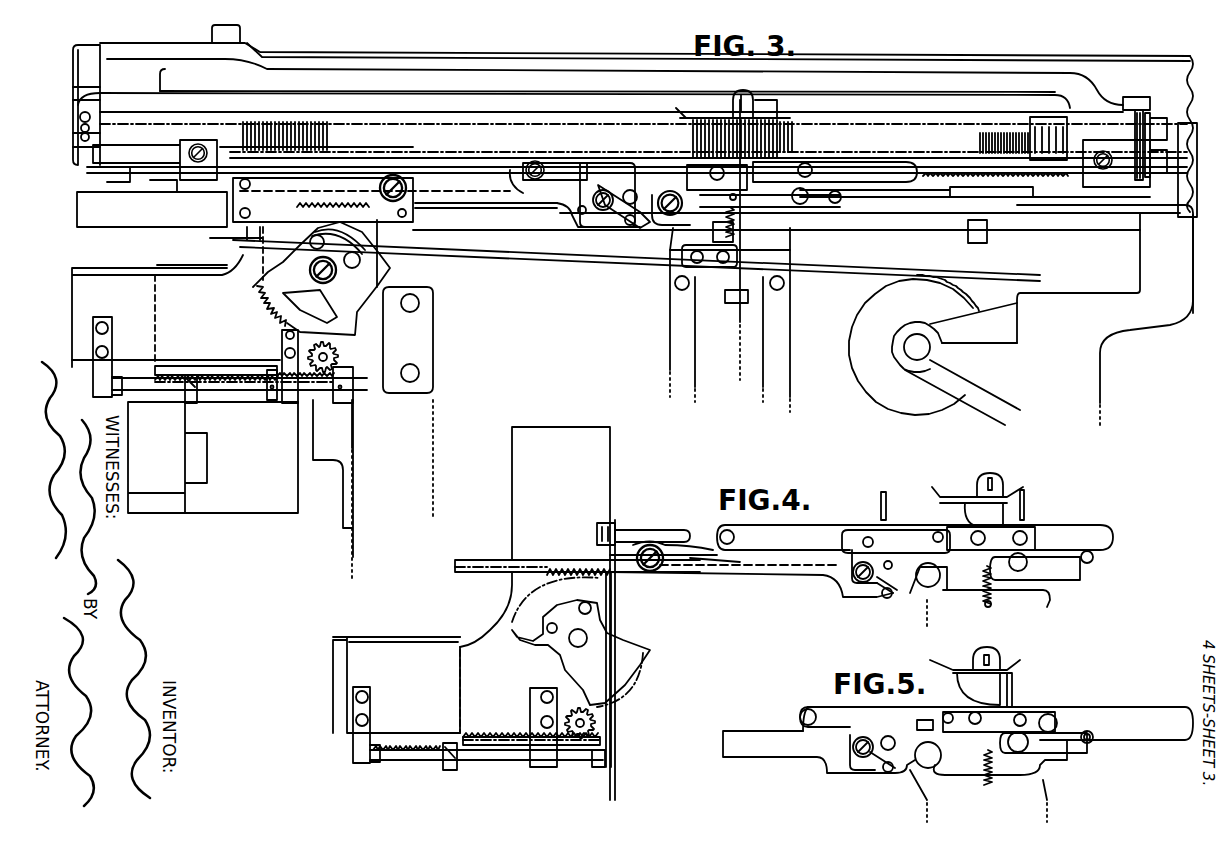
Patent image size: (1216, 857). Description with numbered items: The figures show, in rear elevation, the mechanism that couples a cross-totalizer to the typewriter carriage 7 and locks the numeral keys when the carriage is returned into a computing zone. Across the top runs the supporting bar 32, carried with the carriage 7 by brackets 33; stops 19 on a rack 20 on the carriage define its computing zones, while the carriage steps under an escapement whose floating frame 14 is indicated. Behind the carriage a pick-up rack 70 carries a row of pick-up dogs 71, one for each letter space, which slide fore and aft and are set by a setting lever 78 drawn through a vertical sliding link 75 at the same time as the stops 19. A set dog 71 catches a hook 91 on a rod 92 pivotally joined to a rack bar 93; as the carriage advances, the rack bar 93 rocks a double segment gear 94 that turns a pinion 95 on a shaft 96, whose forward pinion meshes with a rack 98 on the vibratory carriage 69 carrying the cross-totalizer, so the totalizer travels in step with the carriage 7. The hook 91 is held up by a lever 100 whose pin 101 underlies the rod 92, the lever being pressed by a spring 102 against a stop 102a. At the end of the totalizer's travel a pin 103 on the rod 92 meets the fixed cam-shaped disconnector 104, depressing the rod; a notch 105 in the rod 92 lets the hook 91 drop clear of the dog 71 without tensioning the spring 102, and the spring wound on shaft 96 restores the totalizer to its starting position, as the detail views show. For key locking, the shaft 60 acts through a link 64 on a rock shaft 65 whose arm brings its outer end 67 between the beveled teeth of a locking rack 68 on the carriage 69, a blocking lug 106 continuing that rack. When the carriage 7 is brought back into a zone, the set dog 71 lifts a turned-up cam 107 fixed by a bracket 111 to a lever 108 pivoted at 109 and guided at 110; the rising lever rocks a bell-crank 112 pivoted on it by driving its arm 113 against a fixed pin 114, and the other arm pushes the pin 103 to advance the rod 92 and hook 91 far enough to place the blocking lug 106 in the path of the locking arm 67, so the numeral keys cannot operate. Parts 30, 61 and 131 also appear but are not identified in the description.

In FIG. 3, the carriage 7 is at (70, 124).
In FIG. 3, the floating frame 14 is at (650, 190).
In FIG. 3, the stops 19 is at (985, 140).
In FIG. 3, the rack 20 is at (371, 198).
In FIG. 3, the stop 30 is at (768, 100).
In FIG. 3, the supporting bar 32 is at (353, 51).
In FIG. 3, the brackets 33 is at (242, 32).
In FIG. 4, the shaft 60 is at (635, 532).
In FIG. 4, the block 61 is at (617, 523).
In FIG. 3, the link 64 is at (353, 398).
In FIG. 4, the link 64 is at (615, 621).
In FIG. 3, the rock shaft 65 is at (340, 403).
In FIG. 4, the rock shaft 65 is at (598, 768).
In FIG. 3, the locking arm 67 is at (197, 400).
In FIG. 4, the locking arm 67 is at (450, 770).
In FIG. 3, the locking rack 68 is at (170, 383).
In FIG. 4, the locking rack 68 is at (410, 752).
In FIG. 3, the vibratory carriage 69 is at (188, 268).
In FIG. 4, the vibratory carriage 69 is at (390, 637).
In FIG. 3, the pick-up rack 70 is at (637, 142).
In FIG. 3, the pick-up dogs 71 is at (326, 132).
In FIG. 4, the pick-up dogs 71 is at (880, 502).
In FIG. 5, the pick-up dogs 71 is at (1012, 682).
In FIG. 3, the vertical sliding link 75 is at (738, 337).
In FIG. 3, the setting lever 78 is at (725, 240).
In FIG. 4, the hook 91 is at (933, 522).
In FIG. 5, the hook 91 is at (1015, 712).
In FIG. 3, the rod 92 is at (910, 172).
In FIG. 4, the rod 92 is at (915, 537).
In FIG. 5, the rod 92 is at (996, 723).
In FIG. 3, the rack bar 93 is at (486, 216).
In FIG. 4, the rack bar 93 is at (470, 576).
In FIG. 3, the double segment gear 94 is at (352, 285).
In FIG. 4, the double segment gear 94 is at (560, 660).
In FIG. 3, the pinion 95 is at (340, 355).
In FIG. 4, the pinion 95 is at (598, 717).
In FIG. 3, the shaft 96 is at (292, 344).
In FIG. 4, the shaft 96 is at (582, 712).
In FIG. 3, the rack 98 is at (270, 392).
In FIG. 4, the rack 98 is at (480, 738).
In FIG. 3, the lever 100 is at (815, 208).
In FIG. 4, the lever 100 is at (1068, 582).
In FIG. 5, the lever 100 is at (1070, 755).
In FIG. 3, the pin 101 is at (838, 202).
In FIG. 4, the pin 101 is at (1092, 562).
In FIG. 5, the pin 101 is at (1090, 745).
In FIG. 3, the spring 102 is at (735, 225).
In FIG. 4, the spring 102 is at (992, 600).
In FIG. 5, the spring 102 is at (986, 785).
In FIG. 3, the stop 102a is at (780, 165).
In FIG. 3, the pin 103 is at (700, 168).
In FIG. 4, the pin 103 is at (862, 535).
In FIG. 5, the pin 103 is at (929, 726).
In FIG. 3, the fixed disconnector 104 is at (712, 182).
In FIG. 4, the fixed disconnector 104 is at (938, 537).
In FIG. 5, the fixed disconnector 104 is at (952, 714).
In FIG. 3, the notch 105 is at (810, 165).
In FIG. 5, the notch 105 is at (1092, 742).
In FIG. 3, the blocking lug 106 is at (255, 370).
In FIG. 4, the blocking lug 106 is at (443, 745).
In FIG. 3, the cam 107 is at (733, 107).
In FIG. 4, the cam 107 is at (977, 487).
In FIG. 5, the cam 107 is at (975, 658).
In FIG. 3, the lever 108 is at (490, 207).
In FIG. 4, the lever 108 is at (793, 575).
In FIG. 5, the lever 108 is at (835, 773).
In FIG. 3, the pivot 109 is at (398, 175).
In FIG. 4, the pivot 109 is at (655, 572).
In FIG. 3, the guide 110 is at (672, 217).
In FIG. 4, the guide 110 is at (932, 590).
In FIG. 5, the guide 110 is at (932, 770).
In FIG. 4, the bracket 111 is at (984, 515).
In FIG. 5, the bracket 111 is at (955, 690).
In FIG. 3, the bell-crank 112 is at (598, 163).
In FIG. 4, the bell-crank 112 is at (851, 576).
In FIG. 5, the bell-crank 112 is at (851, 747).
In FIG. 3, the arm 113 is at (612, 220).
In FIG. 4, the arm 113 is at (880, 597).
In FIG. 5, the arm 113 is at (883, 772).
In FIG. 4, the fixed pin 114 is at (893, 568).
In FIG. 5, the fixed pin 114 is at (903, 743).
In FIG. 3, the cap 131 is at (743, 98).
In FIG. 4, the cap 131 is at (993, 478).
In FIG. 5, the cap 131 is at (992, 656).